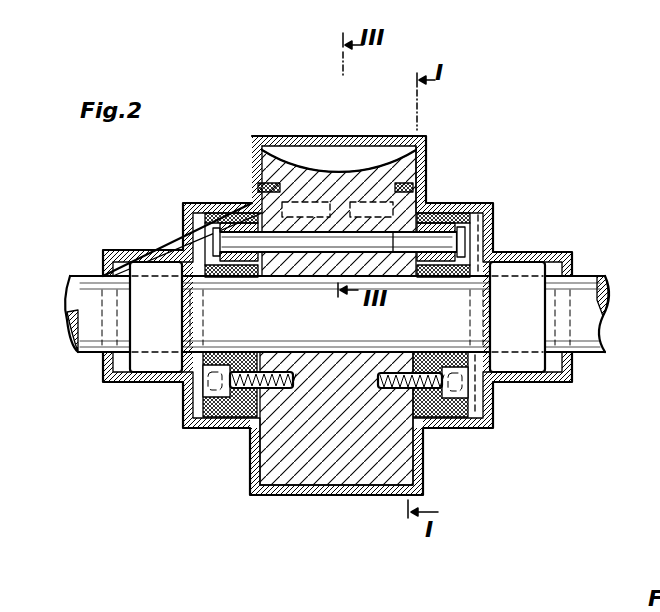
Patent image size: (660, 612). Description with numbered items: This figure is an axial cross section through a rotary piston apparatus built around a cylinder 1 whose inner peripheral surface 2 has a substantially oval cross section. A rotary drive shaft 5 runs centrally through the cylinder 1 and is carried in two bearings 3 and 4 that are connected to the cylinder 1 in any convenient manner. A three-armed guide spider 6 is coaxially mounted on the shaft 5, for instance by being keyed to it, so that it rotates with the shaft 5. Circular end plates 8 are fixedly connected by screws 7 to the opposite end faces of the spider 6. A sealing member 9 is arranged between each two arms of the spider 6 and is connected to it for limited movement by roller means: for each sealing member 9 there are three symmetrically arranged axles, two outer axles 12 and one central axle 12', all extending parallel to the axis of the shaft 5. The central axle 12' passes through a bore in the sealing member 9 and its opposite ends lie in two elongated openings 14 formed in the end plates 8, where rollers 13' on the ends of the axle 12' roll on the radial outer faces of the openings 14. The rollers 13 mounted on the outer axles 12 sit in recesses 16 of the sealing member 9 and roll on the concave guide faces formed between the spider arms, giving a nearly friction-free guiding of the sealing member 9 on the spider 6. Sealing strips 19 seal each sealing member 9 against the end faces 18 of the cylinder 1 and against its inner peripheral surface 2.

The cylinder 1 is at (433, 149).
The inner peripheral surface 2 is at (382, 152).
The bearing 3 is at (133, 252).
The bearing 4 is at (526, 255).
The rotary drive shaft 5 is at (590, 278).
The guide spider 6 is at (395, 440).
The screws 7 is at (217, 390).
The end plates 8 is at (237, 408).
The sealing member 9 is at (258, 140).
The outer axles 12 is at (220, 220).
The central axle 12' is at (484, 232).
The rollers 13 is at (289, 150).
The rollers 13' is at (518, 176).
The elongated openings 14 is at (218, 262).
The recesses 16 is at (333, 253).
The end faces 18 is at (430, 168).
The sealing strips 19 is at (420, 187).